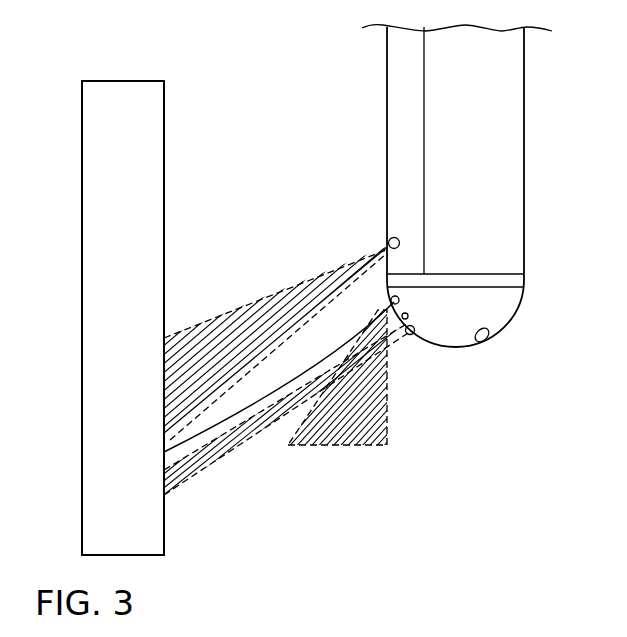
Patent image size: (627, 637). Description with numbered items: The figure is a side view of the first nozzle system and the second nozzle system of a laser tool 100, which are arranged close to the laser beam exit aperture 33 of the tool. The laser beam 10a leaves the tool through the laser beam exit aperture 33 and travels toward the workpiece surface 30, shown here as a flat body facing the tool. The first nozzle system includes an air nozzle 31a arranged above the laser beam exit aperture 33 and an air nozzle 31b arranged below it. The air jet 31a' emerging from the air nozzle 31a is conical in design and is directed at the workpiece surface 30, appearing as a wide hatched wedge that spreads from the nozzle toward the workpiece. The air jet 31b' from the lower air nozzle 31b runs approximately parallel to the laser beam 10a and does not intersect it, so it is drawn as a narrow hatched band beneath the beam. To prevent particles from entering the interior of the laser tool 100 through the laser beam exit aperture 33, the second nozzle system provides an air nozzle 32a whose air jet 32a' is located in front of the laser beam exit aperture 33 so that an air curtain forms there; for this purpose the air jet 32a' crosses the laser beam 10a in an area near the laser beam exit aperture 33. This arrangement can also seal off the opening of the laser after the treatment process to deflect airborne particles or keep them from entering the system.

The workpiece surface 30 is at (163, 117).
The machining tool 100 is at (524, 78).
The air nozzle 31a is at (282, 317).
The air jet 31a' is at (278, 248).
The laser beam 10a is at (302, 374).
The air nozzle 32a is at (491, 303).
The air nozzle 31b is at (420, 363).
The laser beam exit aperture 33 is at (405, 316).
The air jet 32a' is at (374, 376).
The air jet 31b' is at (288, 322).